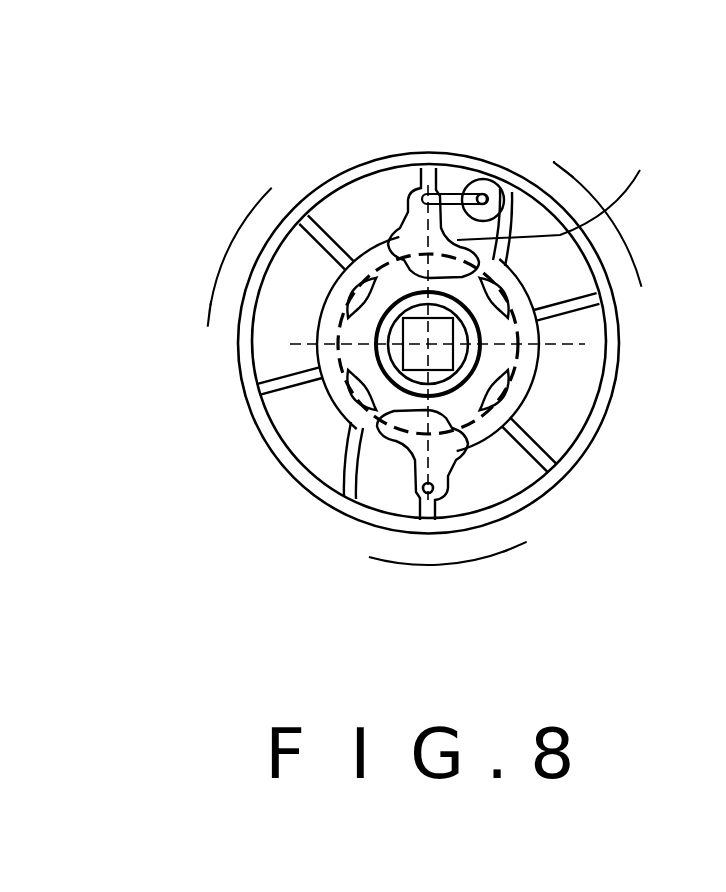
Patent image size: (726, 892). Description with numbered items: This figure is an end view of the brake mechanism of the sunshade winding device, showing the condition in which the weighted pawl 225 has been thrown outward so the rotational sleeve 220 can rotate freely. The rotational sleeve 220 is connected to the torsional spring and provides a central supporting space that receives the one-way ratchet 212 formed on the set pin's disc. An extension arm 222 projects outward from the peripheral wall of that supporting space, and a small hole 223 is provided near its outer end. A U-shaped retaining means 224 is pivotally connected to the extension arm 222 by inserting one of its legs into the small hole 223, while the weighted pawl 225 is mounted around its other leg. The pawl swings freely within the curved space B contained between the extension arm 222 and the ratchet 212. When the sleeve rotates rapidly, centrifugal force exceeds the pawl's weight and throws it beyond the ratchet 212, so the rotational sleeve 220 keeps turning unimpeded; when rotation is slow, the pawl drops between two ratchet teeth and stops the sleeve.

The one-way ratchet 212 is at (495, 354).
The rotational sleeve 220 is at (267, 442).
The extension arm 222 is at (403, 226).
The small hole 223 is at (416, 194).
The U-shaped retaining means 224 is at (432, 192).
The weighted pawl 225 is at (506, 182).
The curved space B is at (564, 193).